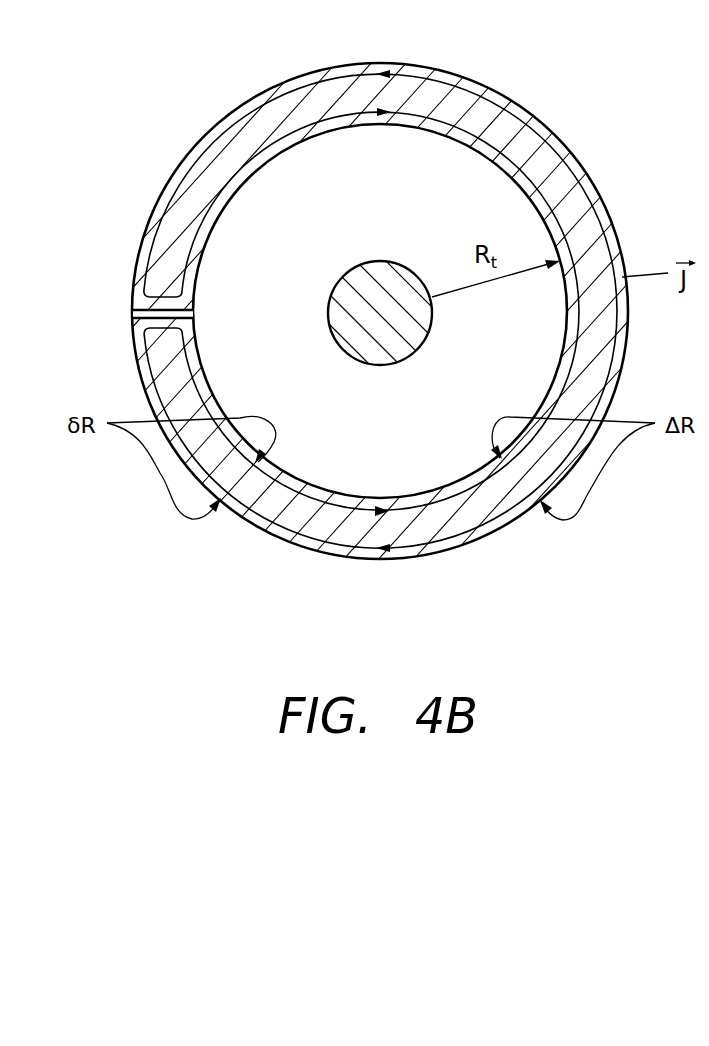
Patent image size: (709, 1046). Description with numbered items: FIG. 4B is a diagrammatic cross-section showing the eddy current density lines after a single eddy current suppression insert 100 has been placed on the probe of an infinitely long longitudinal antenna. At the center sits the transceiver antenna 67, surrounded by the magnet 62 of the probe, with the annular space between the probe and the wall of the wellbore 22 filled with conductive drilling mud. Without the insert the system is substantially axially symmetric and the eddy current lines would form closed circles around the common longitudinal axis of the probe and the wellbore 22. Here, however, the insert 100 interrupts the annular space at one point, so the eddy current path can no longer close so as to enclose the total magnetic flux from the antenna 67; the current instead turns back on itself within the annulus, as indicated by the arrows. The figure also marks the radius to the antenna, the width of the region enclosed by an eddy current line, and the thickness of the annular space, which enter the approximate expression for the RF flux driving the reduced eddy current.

The wellbore 22 is at (530, 110).
The magnet 62 is at (300, 163).
The transceiver antenna 67 is at (346, 283).
The eddy current insulating insert 100 is at (133, 312).